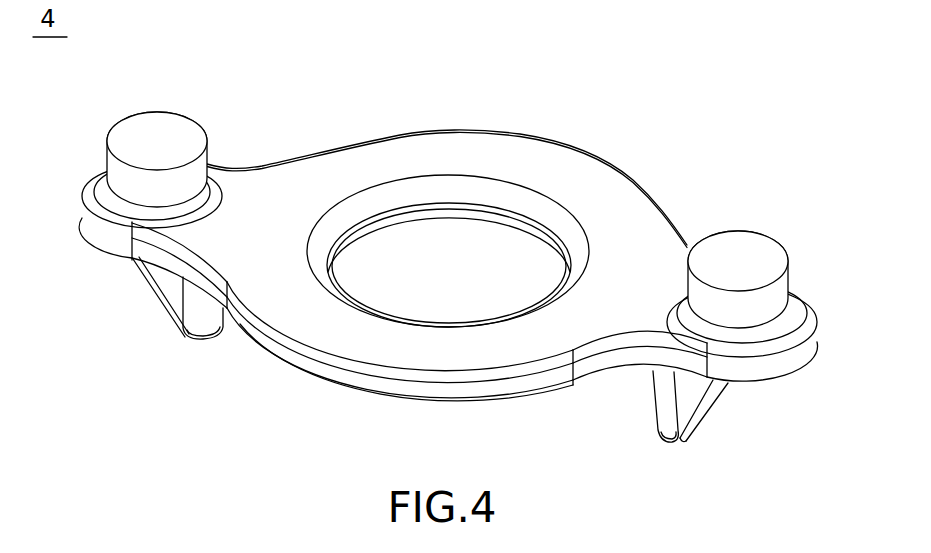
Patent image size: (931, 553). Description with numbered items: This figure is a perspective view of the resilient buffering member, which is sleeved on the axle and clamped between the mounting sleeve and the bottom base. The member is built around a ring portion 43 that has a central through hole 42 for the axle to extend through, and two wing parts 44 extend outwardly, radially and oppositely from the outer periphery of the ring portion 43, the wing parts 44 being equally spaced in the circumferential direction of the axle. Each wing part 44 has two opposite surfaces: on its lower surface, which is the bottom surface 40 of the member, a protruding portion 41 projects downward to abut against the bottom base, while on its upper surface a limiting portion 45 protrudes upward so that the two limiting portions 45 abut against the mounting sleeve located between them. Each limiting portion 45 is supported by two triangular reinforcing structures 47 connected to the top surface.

The bottom surface 40 is at (347, 347).
The protruding portion 41 is at (147, 137).
The central through hole 42 is at (427, 210).
The ring portion 43 is at (630, 158).
The wing part 44 is at (107, 237).
The limiting portion 45 is at (208, 325).
The reinforcing structure 47 is at (157, 307).